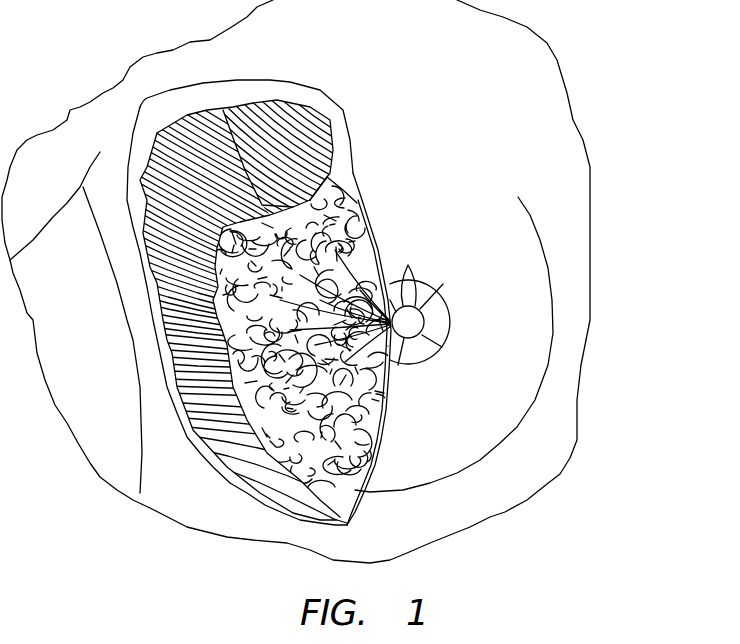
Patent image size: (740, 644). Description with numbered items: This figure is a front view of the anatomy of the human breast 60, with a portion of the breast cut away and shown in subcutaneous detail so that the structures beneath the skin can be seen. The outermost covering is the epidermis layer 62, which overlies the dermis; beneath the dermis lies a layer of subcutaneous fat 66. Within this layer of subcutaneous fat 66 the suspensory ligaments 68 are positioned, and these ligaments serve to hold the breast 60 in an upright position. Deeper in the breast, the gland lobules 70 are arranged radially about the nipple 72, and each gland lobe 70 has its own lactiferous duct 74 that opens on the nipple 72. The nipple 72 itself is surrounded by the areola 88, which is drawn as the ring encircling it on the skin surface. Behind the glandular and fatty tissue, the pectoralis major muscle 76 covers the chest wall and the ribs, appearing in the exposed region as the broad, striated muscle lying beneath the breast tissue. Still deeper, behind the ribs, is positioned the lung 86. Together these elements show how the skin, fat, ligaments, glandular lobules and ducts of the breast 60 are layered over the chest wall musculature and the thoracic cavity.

The breast 60 is at (570, 314).
The epidermis layer 62 is at (391, 490).
The layer of subcutaneous fat 66 is at (386, 418).
The suspensory ligaments 68 is at (320, 222).
The gland lobules 70 is at (370, 465).
The nipple 72 is at (423, 316).
The lactiferous duct 74 is at (442, 347).
The pectoralis major muscle 76 is at (218, 123).
The lung 86 is at (443, 284).
The areola 88 is at (408, 266).